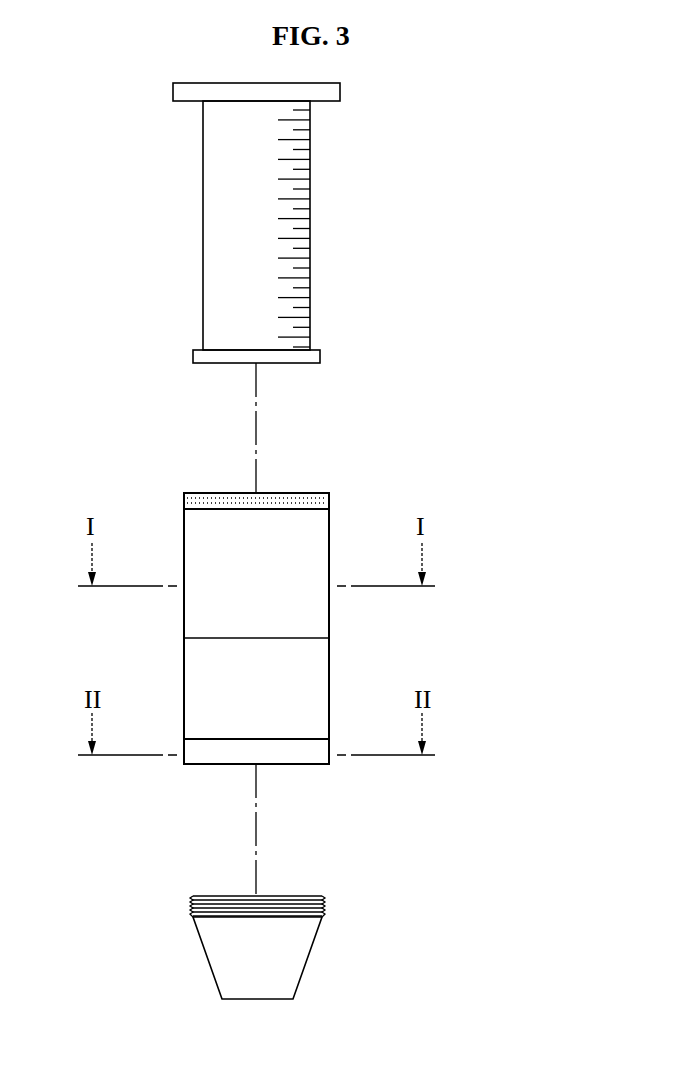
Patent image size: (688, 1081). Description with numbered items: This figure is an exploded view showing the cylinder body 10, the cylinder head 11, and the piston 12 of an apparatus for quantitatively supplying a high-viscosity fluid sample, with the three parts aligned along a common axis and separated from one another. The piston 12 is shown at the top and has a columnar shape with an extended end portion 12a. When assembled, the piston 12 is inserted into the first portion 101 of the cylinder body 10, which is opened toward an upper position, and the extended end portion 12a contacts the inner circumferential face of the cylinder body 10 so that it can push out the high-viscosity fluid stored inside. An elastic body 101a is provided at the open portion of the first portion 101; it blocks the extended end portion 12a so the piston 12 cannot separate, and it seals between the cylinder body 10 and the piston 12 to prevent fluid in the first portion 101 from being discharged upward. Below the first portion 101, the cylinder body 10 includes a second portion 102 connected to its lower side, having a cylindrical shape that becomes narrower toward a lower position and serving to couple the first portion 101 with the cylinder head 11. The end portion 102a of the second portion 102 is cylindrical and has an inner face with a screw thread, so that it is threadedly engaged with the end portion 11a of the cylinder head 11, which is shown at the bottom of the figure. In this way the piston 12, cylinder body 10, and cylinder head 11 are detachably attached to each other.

The cylinder body 10 is at (374, 633).
The first portion 101 is at (312, 538).
The elastic body 101a is at (288, 503).
The second portion 102 is at (312, 678).
The end portion of the second portion 102a is at (280, 753).
The cylinder head 11 is at (282, 946).
The end portion of the cylinder head 11a is at (302, 895).
The piston 12 is at (295, 217).
The extended end portion 12a is at (315, 357).